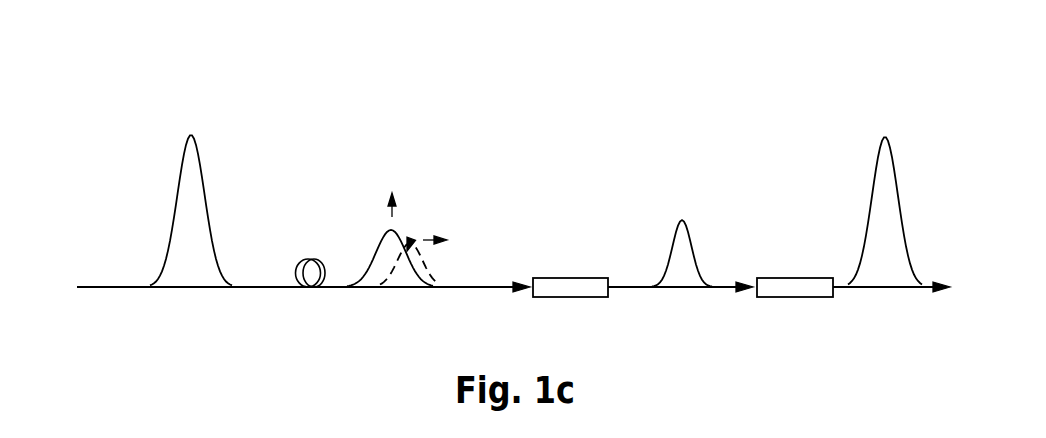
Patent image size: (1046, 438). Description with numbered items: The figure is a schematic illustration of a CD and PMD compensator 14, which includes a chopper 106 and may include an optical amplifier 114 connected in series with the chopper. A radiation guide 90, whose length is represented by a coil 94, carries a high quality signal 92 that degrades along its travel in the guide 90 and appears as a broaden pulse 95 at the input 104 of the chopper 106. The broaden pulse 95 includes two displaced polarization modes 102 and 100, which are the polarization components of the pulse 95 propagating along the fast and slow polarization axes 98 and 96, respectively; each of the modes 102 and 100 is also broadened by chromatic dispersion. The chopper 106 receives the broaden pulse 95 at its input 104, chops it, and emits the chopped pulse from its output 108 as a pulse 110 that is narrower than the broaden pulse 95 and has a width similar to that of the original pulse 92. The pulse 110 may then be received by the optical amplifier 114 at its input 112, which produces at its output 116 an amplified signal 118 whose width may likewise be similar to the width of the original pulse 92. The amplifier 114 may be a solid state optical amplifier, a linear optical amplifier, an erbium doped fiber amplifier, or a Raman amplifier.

The CD and PMD compensator 14 is at (507, 138).
The radiation guide 90 is at (114, 286).
The high quality signal 92 is at (178, 201).
The coil 94 is at (316, 259).
The broaden pulse 95 is at (409, 246).
The slow polarization axis 96 is at (395, 226).
The fast polarization axis 98 is at (423, 240).
The slow polarization mode 100 is at (382, 244).
The fast polarization mode 102 is at (432, 272).
The chopper input 104 is at (507, 284).
The chopper 106 is at (572, 278).
The chopper output 108 is at (628, 286).
The chopped pulse 110 is at (681, 220).
The amplifier input 112 is at (732, 287).
The optical amplifier 114 is at (802, 278).
The amplifier output 116 is at (845, 286).
The amplified signal 118 is at (887, 135).